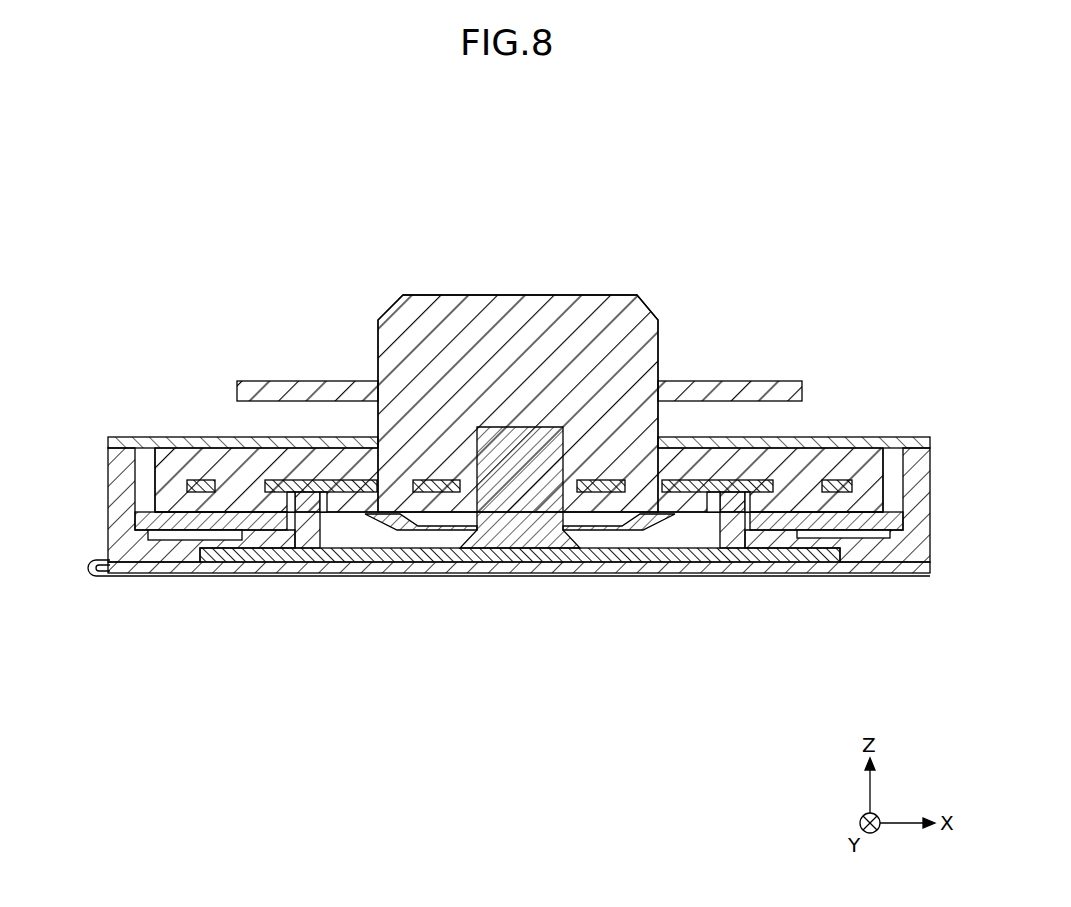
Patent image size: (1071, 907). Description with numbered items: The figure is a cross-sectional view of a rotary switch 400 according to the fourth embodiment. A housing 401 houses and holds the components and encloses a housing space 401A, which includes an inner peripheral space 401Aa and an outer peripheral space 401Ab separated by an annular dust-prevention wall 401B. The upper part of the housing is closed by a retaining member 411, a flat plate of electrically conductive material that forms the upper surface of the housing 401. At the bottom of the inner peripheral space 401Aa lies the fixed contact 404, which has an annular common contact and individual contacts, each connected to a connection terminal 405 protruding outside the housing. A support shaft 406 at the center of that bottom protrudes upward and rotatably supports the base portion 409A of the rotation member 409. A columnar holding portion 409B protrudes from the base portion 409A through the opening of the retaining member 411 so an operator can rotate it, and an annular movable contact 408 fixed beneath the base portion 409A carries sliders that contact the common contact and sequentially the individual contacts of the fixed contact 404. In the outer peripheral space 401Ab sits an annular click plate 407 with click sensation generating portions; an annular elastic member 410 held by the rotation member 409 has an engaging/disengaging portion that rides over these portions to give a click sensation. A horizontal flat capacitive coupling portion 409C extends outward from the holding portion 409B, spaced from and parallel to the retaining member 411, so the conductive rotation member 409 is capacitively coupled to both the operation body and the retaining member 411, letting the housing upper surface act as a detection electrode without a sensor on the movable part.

The rotary switch 400 is at (937, 159).
The housing 401 is at (515, 522).
The housing space 401A is at (492, 522).
The inner peripheral space 401Aa is at (375, 550).
The outer peripheral space 401Ab is at (130, 477).
The dust-prevention wall 401B is at (312, 542).
The fixed contact 404 is at (805, 558).
The connection terminal 405 is at (92, 577).
The support shaft 406 is at (552, 465).
The click plate 407 is at (185, 531).
The movable contact 408 is at (440, 531).
The rotation member 409 is at (529, 349).
The base portion 409A is at (195, 460).
The holding portion 409B is at (622, 302).
The capacitive coupling portion 409C is at (748, 381).
The elastic member 410 is at (290, 494).
The retaining member 411 is at (233, 437).